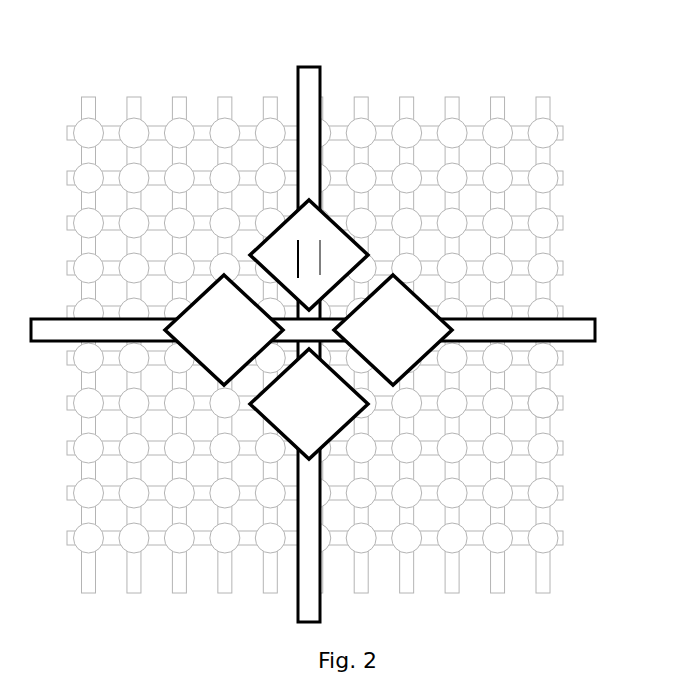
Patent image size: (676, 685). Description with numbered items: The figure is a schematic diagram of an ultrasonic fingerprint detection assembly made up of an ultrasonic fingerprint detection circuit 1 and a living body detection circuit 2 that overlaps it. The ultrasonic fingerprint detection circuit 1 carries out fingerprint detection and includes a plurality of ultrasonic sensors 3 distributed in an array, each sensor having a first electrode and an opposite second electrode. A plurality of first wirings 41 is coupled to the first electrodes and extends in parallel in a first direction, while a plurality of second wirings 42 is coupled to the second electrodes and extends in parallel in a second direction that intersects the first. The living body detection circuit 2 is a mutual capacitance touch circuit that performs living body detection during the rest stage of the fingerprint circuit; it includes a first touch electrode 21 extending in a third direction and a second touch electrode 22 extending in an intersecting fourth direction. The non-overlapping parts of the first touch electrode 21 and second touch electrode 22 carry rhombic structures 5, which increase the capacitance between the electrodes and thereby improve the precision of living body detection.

The ultrasonic fingerprint detection circuit 1 is at (364, 345).
The living body detection circuit 2 is at (351, 320).
The first touch electrode 21 is at (312, 64).
The second touch electrode 22 is at (351, 320).
The ultrasonic sensor 3 is at (583, 381).
The first wiring 41 is at (595, 345).
The second wiring 42 is at (364, 422).
The rhombic structure 5 is at (394, 329).